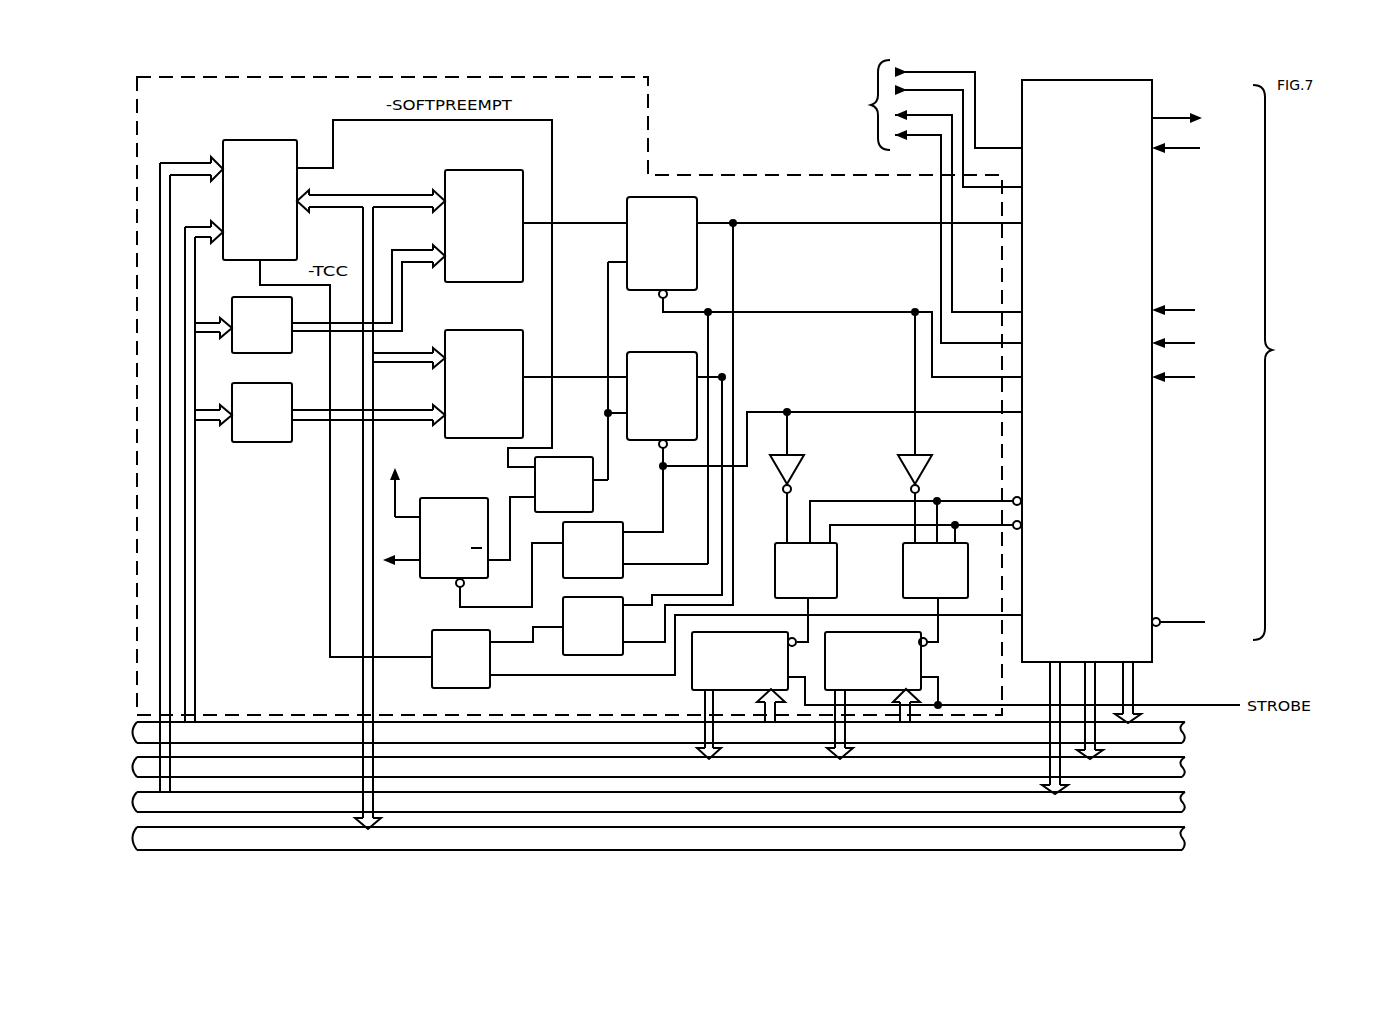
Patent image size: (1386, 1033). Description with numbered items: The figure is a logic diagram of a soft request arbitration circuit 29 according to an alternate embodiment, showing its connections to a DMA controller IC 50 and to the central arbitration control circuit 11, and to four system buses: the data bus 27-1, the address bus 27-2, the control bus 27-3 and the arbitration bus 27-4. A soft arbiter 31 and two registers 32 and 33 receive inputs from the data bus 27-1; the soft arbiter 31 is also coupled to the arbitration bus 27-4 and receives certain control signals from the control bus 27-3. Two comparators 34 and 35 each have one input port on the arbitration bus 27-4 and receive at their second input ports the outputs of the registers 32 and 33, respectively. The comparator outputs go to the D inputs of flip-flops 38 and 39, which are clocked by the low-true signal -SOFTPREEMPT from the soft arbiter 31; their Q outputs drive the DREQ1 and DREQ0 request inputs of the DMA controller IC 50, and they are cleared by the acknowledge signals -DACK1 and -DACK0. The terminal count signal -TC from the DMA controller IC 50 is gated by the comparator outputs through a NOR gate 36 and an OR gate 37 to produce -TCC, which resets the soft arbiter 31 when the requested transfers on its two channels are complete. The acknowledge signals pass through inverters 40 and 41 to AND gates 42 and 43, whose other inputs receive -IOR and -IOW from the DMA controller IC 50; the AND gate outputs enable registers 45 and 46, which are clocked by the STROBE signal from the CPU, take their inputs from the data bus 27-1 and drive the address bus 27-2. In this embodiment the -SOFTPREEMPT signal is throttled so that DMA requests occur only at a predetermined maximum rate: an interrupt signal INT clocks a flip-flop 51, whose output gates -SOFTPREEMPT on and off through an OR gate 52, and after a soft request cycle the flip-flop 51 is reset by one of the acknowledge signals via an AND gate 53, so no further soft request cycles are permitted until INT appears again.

The soft request arbitration circuit 29 is at (325, 713).
The soft arbiter 31 is at (273, 139).
The register 32 is at (292, 313).
The register 33 is at (292, 398).
The comparator 34 is at (489, 170).
The comparator 35 is at (489, 330).
The NOR gate 36 is at (573, 656).
The OR gate 37 is at (432, 685).
The flip-flop 38 is at (642, 196).
The flip-flop 39 is at (653, 350).
The inverter 40 is at (797, 474).
The inverter 41 is at (900, 465).
The AND gate 42 is at (838, 568).
The AND gate 43 is at (903, 558).
The register 45 is at (921, 664).
The register 46 is at (692, 690).
The DMA controller IC 50 is at (1095, 80).
The flip-flop 51 is at (458, 496).
The OR gate 52 is at (558, 457).
The AND gate 53 is at (606, 522).
The central arbitration control circuit 11 is at (869, 201).
The data bus 27-1 is at (1186, 735).
The address bus 27-2 is at (1186, 770).
The control bus 27-3 is at (1186, 804).
The arbitration bus 27-4 is at (1186, 839).